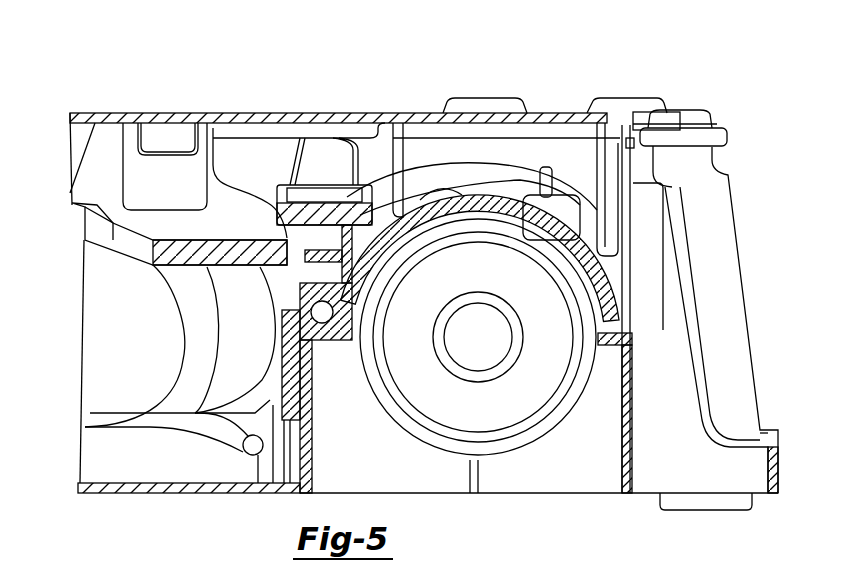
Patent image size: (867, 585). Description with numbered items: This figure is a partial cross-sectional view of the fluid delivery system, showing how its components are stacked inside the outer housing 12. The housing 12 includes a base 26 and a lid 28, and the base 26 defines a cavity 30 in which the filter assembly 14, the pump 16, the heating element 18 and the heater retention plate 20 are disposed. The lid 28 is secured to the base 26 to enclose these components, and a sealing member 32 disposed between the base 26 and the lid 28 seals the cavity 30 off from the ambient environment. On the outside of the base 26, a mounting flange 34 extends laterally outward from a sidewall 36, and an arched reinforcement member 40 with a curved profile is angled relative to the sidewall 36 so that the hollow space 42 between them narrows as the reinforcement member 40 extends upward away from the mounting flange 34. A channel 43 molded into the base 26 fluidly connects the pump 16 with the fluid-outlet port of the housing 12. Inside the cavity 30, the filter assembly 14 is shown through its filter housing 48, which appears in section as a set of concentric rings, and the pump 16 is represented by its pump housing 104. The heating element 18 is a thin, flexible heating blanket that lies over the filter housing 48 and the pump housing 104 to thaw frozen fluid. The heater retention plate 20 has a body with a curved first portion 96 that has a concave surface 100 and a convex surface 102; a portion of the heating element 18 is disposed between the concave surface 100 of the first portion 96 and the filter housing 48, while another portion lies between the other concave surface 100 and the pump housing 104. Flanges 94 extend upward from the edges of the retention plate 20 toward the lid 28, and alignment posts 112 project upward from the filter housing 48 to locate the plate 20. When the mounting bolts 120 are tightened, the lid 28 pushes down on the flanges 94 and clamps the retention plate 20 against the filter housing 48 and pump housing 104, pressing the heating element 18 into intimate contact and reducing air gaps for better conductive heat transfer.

The outer housing 12 is at (135, 505).
The filter assembly 14 is at (512, 462).
The pump 16 is at (108, 448).
The heating element 18 is at (230, 225).
The heater retention plate 20 is at (620, 212).
The base 26 is at (172, 493).
The lid 28 is at (277, 113).
The cavity 30 is at (193, 462).
The sealing member 32 is at (650, 146).
The mounting flange 34 is at (782, 462).
The sidewall 36 is at (632, 402).
The arched reinforcement member 40 is at (730, 340).
The hollow space 42 is at (657, 308).
The channel 43 is at (322, 323).
The filter housing 48 is at (570, 407).
The flange 94 is at (132, 143).
The first portion 96 is at (447, 180).
The concave surface 100 is at (440, 203).
The convex surface 102 is at (435, 195).
The pump housing 104 is at (113, 243).
The alignment post 112 is at (629, 135).
The mounting bolt 120 is at (692, 123).